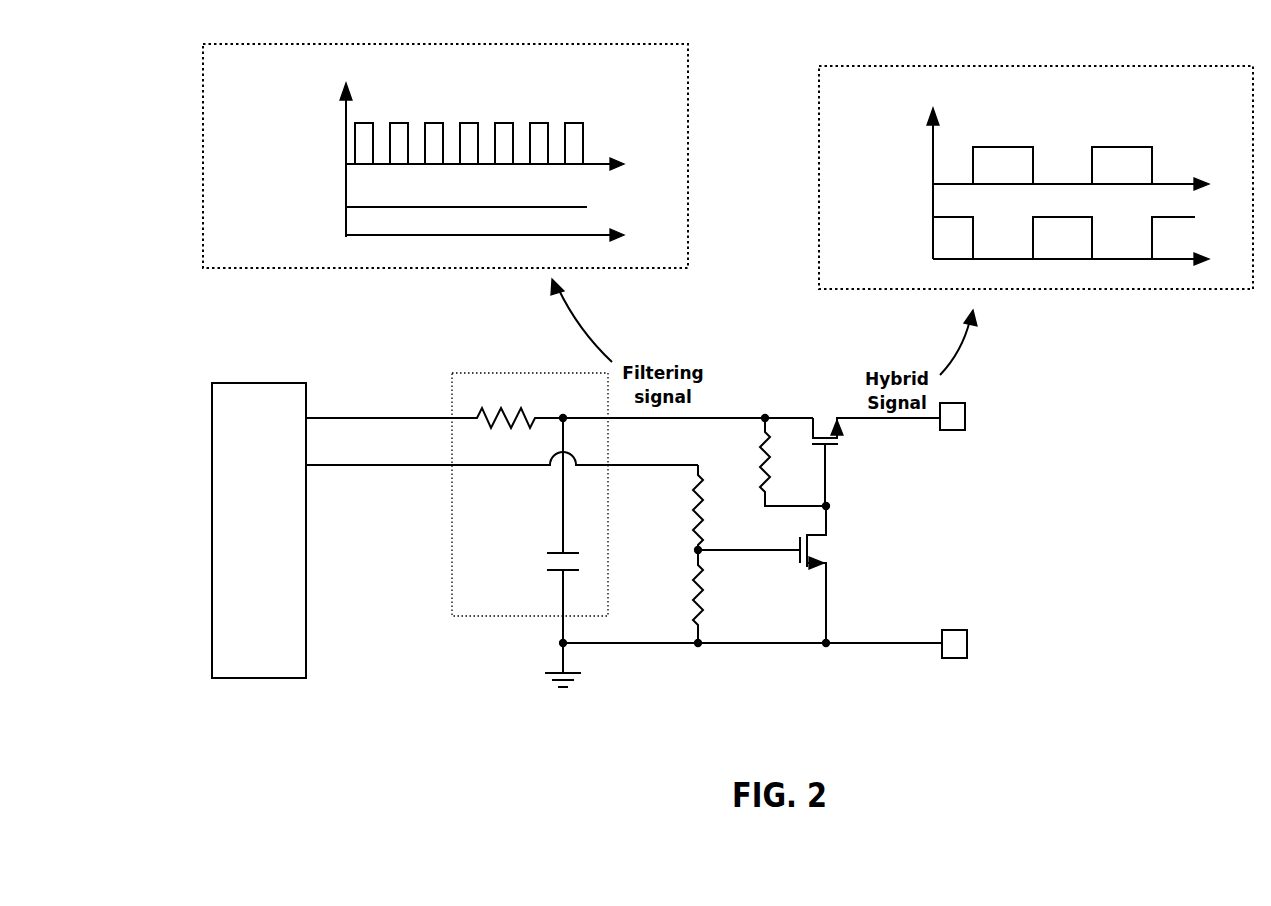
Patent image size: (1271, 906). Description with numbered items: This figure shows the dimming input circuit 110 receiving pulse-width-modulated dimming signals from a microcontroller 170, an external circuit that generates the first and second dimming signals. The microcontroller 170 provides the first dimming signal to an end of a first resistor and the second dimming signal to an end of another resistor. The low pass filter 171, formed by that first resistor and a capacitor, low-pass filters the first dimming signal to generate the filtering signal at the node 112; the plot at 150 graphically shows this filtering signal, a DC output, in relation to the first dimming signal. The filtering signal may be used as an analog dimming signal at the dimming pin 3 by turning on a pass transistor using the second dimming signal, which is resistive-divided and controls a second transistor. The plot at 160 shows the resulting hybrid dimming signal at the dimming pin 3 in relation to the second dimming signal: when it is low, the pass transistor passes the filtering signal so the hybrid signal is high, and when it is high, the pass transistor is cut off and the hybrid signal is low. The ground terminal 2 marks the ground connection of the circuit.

The graphical representation of the filtering signal in relation to the dimming sign 150 is at (413, 270).
The graphical representation of the hybrid dimming signal in relation to the dimming 160 is at (1162, 289).
The microcontroller (MCU) 170 is at (280, 382).
The low pass filter 171 is at (495, 616).
The node 112 is at (562, 406).
The dimming input circuit 110 is at (1052, 510).
The dimming pin 3 is at (955, 431).
The GND terminal 2 is at (950, 633).